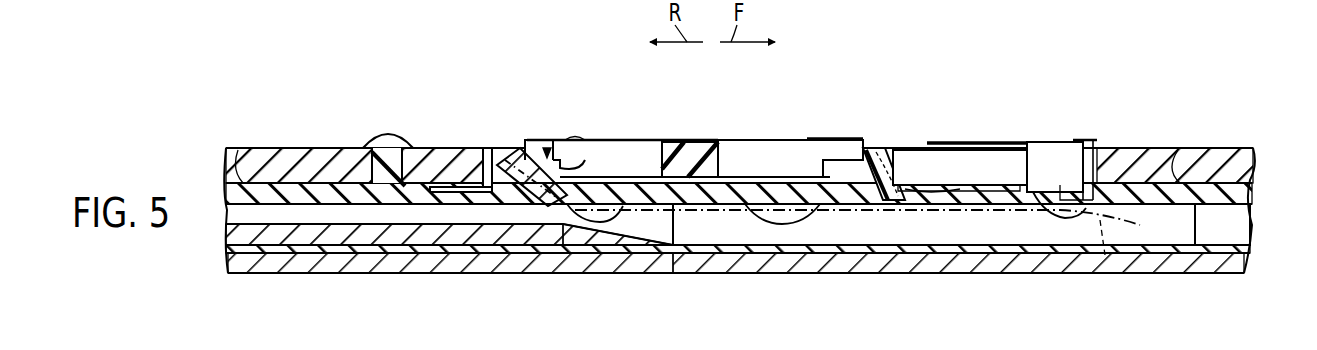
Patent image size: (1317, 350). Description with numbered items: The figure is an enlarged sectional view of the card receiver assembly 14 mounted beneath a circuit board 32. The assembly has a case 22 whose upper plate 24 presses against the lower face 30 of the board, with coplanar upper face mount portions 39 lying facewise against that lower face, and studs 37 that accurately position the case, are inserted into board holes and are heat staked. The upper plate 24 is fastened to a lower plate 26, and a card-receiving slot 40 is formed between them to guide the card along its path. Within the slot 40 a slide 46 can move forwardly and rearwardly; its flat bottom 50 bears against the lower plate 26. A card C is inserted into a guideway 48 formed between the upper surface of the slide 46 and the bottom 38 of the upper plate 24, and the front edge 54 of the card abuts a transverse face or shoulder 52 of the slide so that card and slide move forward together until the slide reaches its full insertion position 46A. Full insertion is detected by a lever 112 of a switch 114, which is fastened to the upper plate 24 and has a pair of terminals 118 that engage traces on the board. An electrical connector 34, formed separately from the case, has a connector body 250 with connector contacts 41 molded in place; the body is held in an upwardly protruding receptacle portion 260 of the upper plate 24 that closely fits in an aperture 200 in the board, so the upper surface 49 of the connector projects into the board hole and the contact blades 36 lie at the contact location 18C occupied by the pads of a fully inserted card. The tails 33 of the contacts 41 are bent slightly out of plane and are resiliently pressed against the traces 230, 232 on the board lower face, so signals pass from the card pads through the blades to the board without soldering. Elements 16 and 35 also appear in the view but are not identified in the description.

The receiver assembly 14 is at (872, 108).
The base layer 16 is at (537, 268).
The contact location 18C is at (856, 258).
The case 22 is at (225, 250).
The upper plate 24 is at (333, 148).
The lower plate 26 is at (427, 270).
The lower face of the circuit board 30 is at (1230, 212).
The circuit board 32 is at (284, 146).
The tails 33 is at (479, 150).
The electrical connector 34 is at (749, 136).
The latch bracket 35 is at (572, 165).
The contact blades 36 is at (751, 262).
The studs 37 is at (387, 140).
The bottom of the upper plate 38 is at (834, 212).
The upper face mount portions 39 is at (237, 150).
The card-receiving slot 40 is at (971, 233).
The connector contacts 41 is at (547, 146).
The slide 46 is at (317, 258).
The full insertion position 46A is at (1115, 260).
The guideway 48 is at (371, 235).
The upper surface of the connector 49 is at (567, 140).
The flat bottom 50 is at (462, 255).
The transverse face 52 is at (519, 262).
The front edge 54 is at (626, 176).
The lever 112 is at (1051, 216).
The switch 114 is at (1059, 150).
The terminals 118 is at (1222, 224).
The aperture 200 is at (499, 150).
The traces 230 is at (431, 148).
The traces 232 is at (959, 150).
The connector body 250 is at (803, 150).
The receptacle portion 260 is at (877, 130).
The card C is at (240, 214).